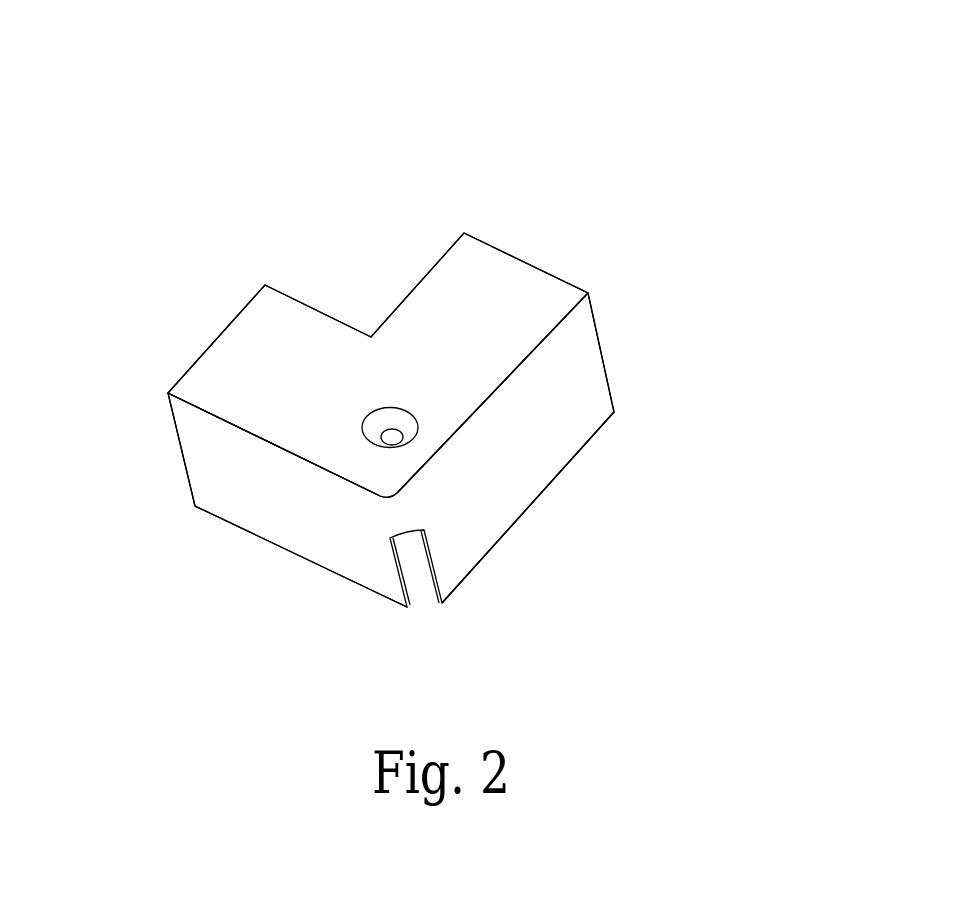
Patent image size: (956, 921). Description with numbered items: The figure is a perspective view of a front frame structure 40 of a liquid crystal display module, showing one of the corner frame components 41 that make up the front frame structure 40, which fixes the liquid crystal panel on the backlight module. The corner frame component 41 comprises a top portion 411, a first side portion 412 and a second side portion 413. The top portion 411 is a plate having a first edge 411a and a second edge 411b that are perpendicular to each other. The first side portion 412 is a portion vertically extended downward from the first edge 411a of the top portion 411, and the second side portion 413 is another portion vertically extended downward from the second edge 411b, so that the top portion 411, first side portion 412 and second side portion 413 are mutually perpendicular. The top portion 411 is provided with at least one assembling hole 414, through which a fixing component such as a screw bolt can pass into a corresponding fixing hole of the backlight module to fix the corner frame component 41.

The front frame structure 40 is at (663, 48).
The corner frame component 41 is at (592, 255).
The top portion 411 is at (253, 330).
The first edge 411a is at (243, 430).
The second edge 411b is at (537, 352).
The first side portion 412 is at (267, 513).
The second side portion 413 is at (533, 455).
The assembling hole 414 is at (395, 437).